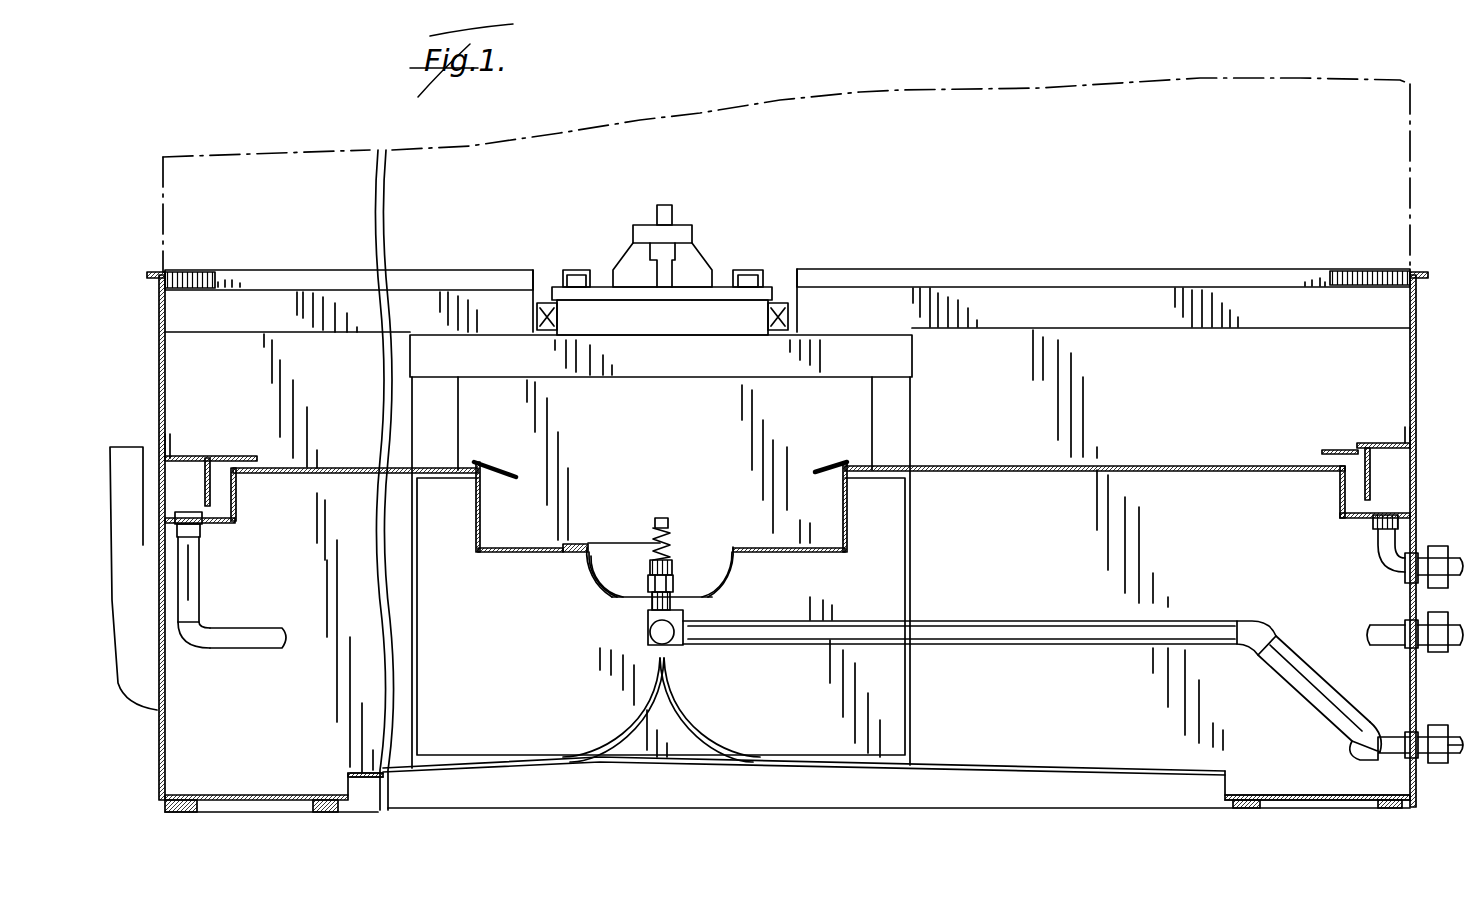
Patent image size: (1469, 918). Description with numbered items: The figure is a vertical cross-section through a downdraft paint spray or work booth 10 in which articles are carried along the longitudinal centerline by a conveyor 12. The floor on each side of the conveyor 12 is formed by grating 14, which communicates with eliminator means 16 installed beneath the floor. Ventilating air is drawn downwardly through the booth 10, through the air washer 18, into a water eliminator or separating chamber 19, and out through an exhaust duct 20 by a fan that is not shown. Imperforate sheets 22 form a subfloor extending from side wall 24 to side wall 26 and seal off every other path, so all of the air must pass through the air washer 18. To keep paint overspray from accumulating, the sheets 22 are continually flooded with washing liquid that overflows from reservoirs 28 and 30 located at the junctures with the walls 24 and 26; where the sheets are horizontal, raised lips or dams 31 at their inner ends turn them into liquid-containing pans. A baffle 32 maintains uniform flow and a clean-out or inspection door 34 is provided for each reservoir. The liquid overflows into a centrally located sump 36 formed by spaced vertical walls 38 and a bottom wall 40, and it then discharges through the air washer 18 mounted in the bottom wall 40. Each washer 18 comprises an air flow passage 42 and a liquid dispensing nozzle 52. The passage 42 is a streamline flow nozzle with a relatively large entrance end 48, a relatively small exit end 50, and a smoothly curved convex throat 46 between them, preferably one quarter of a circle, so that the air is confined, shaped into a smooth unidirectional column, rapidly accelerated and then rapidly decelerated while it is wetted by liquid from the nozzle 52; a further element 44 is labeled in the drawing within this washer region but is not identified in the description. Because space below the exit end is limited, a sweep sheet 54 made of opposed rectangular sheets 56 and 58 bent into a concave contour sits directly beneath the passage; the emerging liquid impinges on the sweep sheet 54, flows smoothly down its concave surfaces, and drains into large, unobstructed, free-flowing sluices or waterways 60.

The booth 10 is at (1282, 154).
The conveyor 12 is at (708, 226).
The grating 14 is at (838, 270).
The eliminator means 16 is at (1152, 397).
The air washer 18 is at (627, 564).
The separating chamber 19 is at (1064, 564).
The exhaust duct 20 is at (146, 677).
The imperforate sheets 22 is at (996, 466).
The side wall 24 is at (165, 362).
The side wall 26 is at (1408, 360).
The overflow reservoir 28 is at (228, 511).
The overflow reservoir 30 is at (1350, 486).
The raised lip or dam 31 is at (475, 460).
The baffle 32 is at (212, 492).
The clean-out or inspection door 34 is at (200, 456).
The sump 36 is at (502, 532).
The vertical walls 38 is at (476, 510).
The bottom wall 40 is at (802, 553).
The air flow passage 42 is at (616, 547).
The funnel outlet 44 is at (617, 566).
The throat 46 is at (712, 584).
The entrance end 48 is at (645, 545).
The exit end 50 is at (636, 600).
The liquid dispensing nozzle 52 is at (668, 520).
The sweep sheet 54 is at (680, 690).
The rectangular sheet 56 is at (642, 720).
The rectangular sheet 58 is at (697, 724).
The sluices or waterways 60 is at (302, 790).